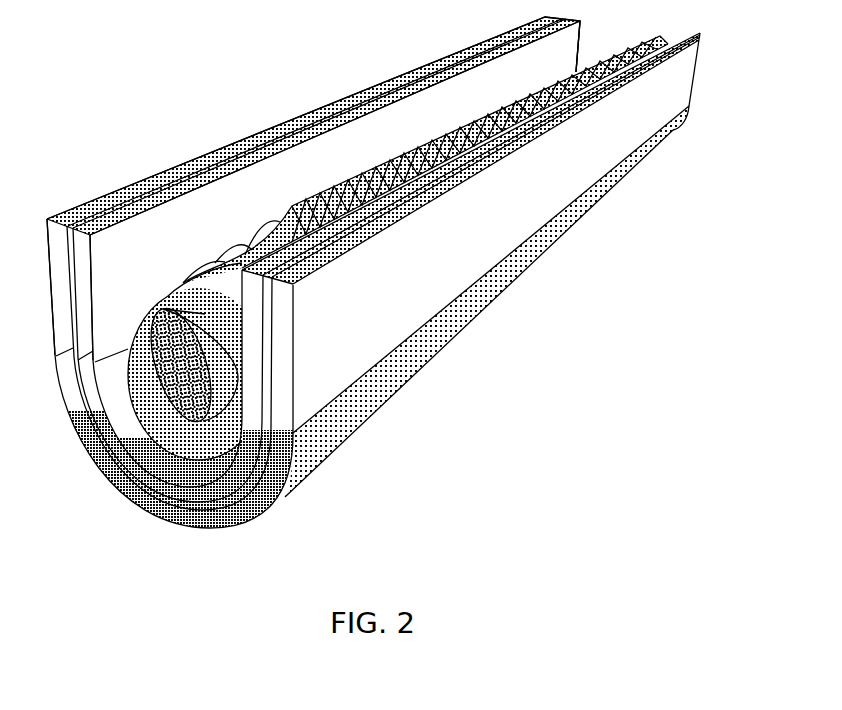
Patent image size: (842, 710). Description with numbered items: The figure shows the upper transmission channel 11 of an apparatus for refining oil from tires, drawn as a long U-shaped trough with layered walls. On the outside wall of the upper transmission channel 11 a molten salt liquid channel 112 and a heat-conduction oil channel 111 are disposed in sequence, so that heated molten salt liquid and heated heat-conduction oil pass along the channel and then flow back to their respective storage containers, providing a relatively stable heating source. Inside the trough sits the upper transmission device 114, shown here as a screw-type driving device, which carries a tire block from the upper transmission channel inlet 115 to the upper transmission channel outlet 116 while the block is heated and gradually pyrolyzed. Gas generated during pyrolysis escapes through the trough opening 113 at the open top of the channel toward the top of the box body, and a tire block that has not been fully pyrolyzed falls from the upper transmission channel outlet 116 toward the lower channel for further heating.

The upper transmission channel 11 is at (373, 300).
The heat-conduction oil channel 111 is at (128, 482).
The molten salt liquid channel 112 is at (210, 487).
The trough opening 113 is at (253, 205).
The upper transmission device 114 is at (147, 380).
The upper transmission channel inlet 115 is at (558, 60).
The upper transmission channel outlet 116 is at (155, 262).